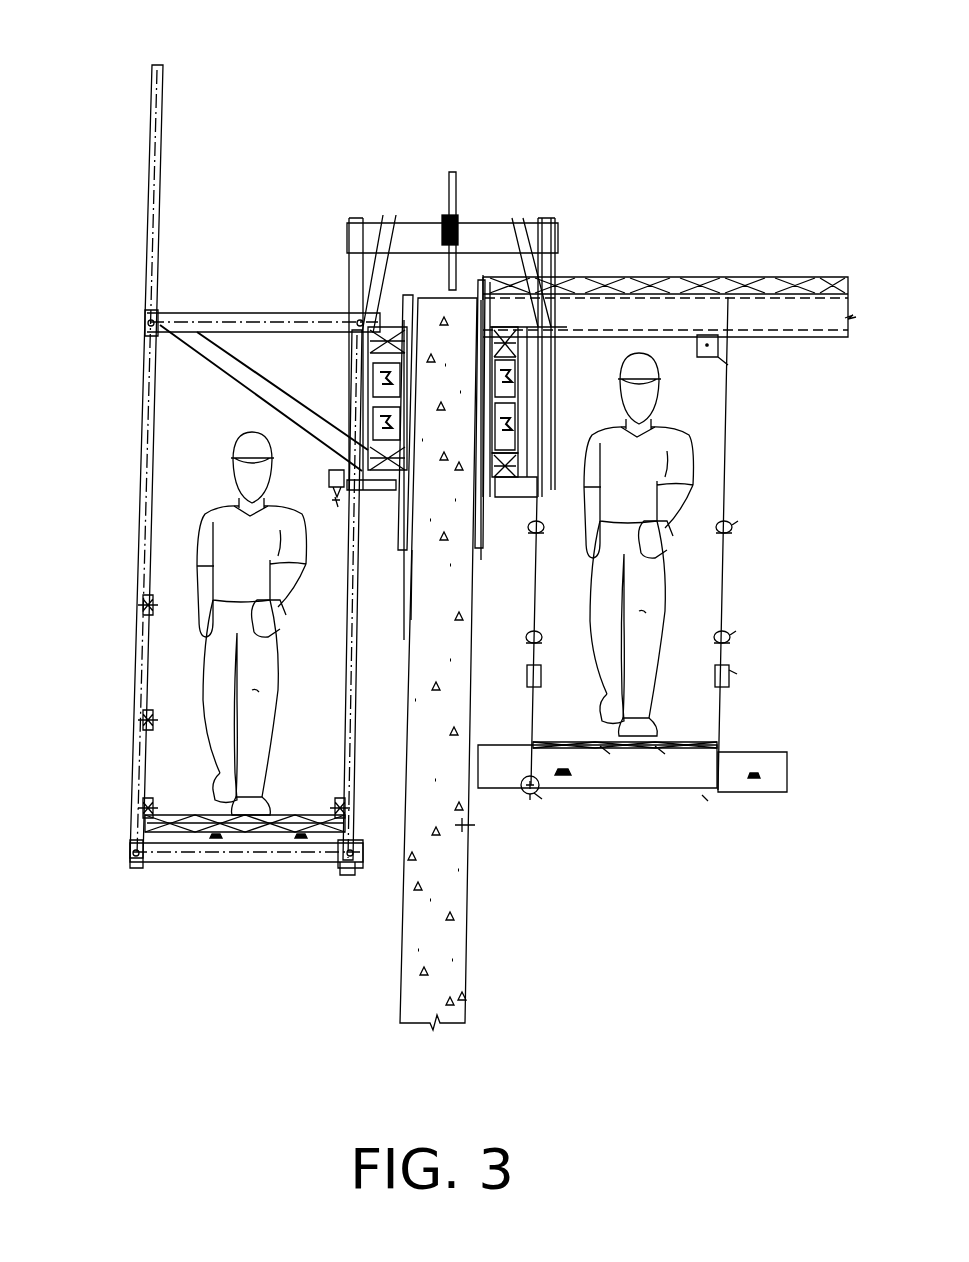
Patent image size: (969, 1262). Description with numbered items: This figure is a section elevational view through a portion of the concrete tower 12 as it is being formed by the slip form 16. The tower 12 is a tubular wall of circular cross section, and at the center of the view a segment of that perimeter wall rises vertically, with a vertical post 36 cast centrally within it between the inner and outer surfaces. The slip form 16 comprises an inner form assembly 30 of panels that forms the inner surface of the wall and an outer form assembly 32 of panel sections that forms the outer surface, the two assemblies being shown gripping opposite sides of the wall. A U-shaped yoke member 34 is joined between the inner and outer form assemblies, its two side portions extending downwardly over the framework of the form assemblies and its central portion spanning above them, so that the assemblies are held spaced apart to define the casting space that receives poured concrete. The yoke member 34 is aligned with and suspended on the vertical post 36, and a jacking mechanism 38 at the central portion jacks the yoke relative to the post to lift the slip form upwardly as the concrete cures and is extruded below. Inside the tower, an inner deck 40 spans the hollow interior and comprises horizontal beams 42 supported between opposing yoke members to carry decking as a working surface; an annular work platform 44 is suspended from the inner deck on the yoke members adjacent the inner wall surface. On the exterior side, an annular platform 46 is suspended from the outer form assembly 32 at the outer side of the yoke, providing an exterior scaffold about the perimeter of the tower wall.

The tower 12 is at (433, 962).
The slip form 16 is at (383, 175).
The inner form assembly 30 is at (492, 400).
The outer form assembly 32 is at (403, 387).
The yoke member 34 is at (527, 215).
The vertical post 36 is at (453, 180).
The jacking mechanism 38 is at (442, 228).
The inner deck 40 is at (752, 265).
The beam 42 is at (808, 337).
The annular work platform 44 is at (683, 740).
The annular platform 46 is at (180, 810).